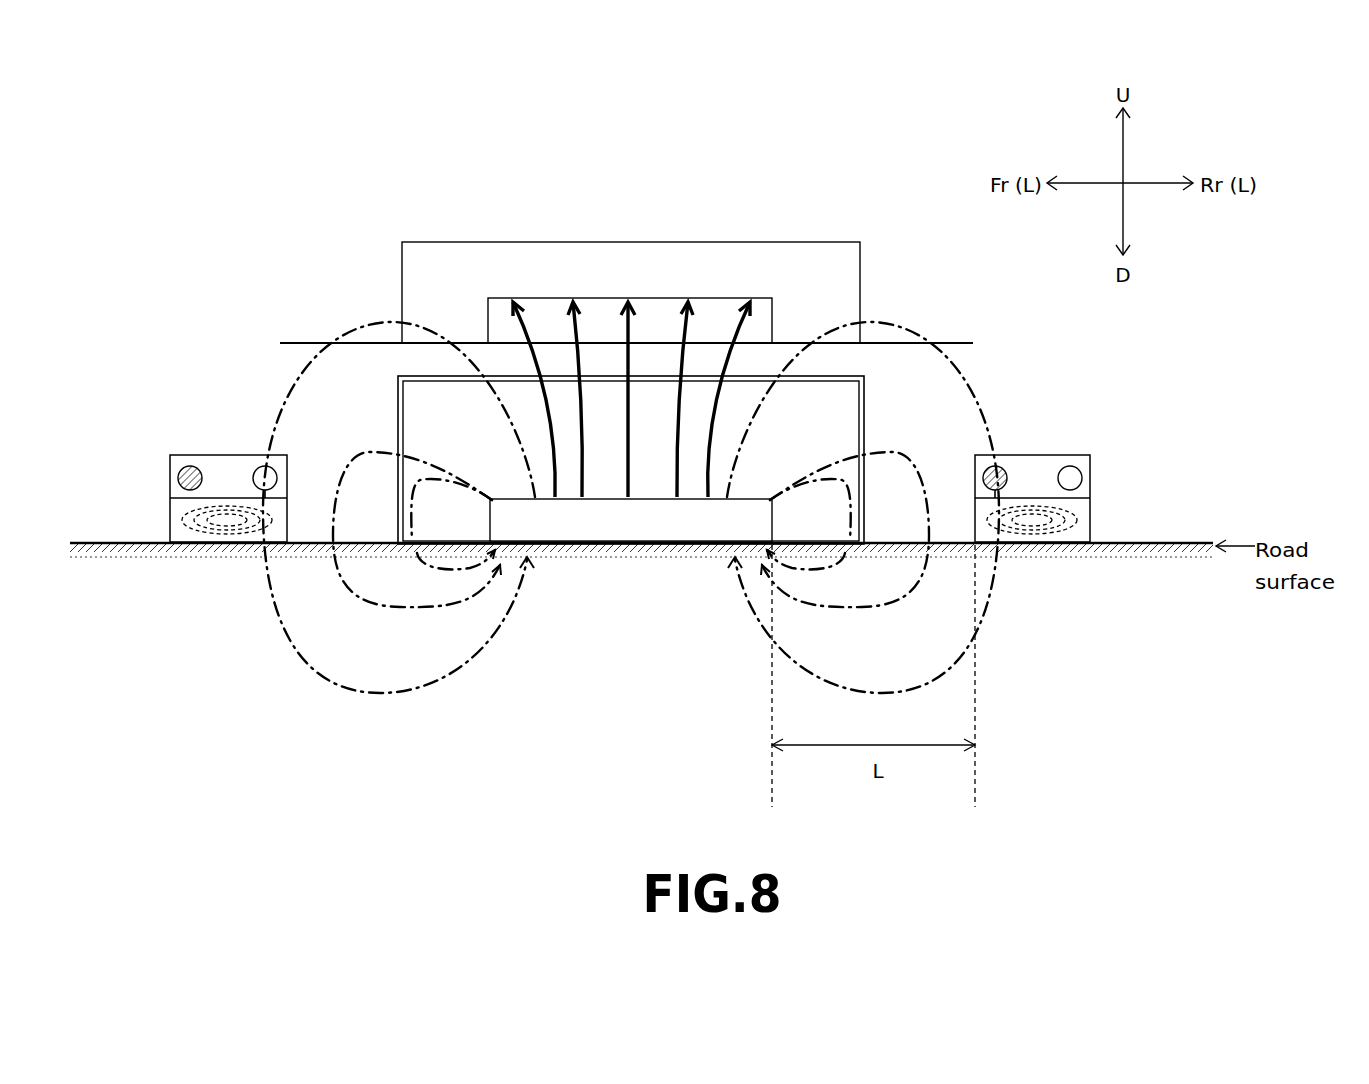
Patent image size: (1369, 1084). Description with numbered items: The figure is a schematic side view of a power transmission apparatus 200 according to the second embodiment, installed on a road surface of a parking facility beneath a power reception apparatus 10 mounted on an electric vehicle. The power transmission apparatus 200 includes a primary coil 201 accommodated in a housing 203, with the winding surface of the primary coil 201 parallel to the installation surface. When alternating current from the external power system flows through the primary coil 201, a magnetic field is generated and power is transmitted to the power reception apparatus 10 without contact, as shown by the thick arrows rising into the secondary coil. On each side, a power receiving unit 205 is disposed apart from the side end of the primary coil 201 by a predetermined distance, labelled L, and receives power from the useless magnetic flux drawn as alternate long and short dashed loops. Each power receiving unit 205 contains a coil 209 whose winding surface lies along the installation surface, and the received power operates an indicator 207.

The power reception apparatus 10 is at (850, 232).
The power transmission apparatus 200 is at (791, 431).
The primary coil 201 is at (657, 497).
The housing 203 is at (865, 408).
The power receiving unit 205 is at (631, 498).
The indicator 207 is at (188, 455).
The coil 209 is at (208, 545).